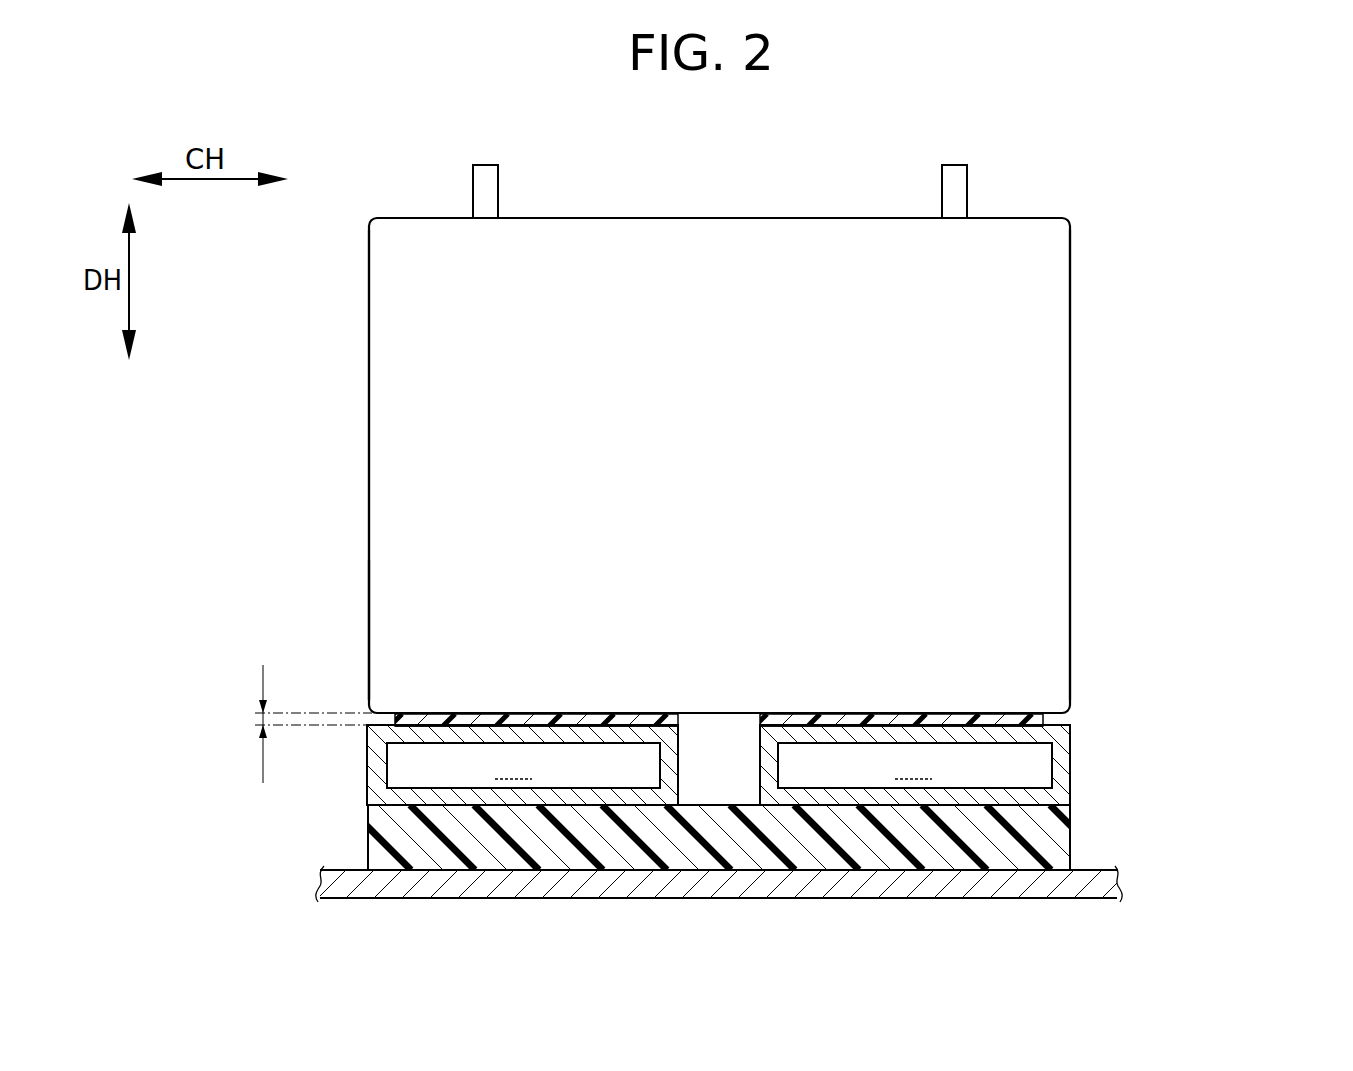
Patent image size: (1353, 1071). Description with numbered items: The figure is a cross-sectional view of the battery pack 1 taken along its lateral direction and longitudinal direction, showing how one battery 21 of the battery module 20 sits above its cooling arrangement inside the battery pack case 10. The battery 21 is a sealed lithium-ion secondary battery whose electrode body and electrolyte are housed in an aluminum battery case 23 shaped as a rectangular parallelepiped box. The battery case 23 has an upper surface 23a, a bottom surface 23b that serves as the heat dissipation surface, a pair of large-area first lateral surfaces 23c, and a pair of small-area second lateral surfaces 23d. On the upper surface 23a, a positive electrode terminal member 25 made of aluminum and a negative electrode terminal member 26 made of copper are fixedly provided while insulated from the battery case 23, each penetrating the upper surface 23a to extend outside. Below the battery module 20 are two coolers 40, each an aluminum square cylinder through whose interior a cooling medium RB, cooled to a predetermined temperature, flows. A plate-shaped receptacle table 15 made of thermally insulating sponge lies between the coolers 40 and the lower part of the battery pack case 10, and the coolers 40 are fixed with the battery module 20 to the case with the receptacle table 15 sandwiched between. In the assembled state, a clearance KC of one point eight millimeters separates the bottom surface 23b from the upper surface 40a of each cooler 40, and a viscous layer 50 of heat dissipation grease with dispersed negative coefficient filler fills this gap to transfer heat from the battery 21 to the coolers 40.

The battery pack 1 is at (1175, 210).
The battery pack case 10 is at (930, 890).
The receptacle table 15 is at (1037, 833).
The battery module 20 is at (723, 442).
The battery 21 is at (690, 242).
The battery case 23 is at (723, 442).
The upper surface 23a is at (570, 218).
The bottom surface 23b is at (990, 725).
The first lateral surface 23c is at (427, 448).
The second lateral surface 23d is at (367, 562).
The positive electrode terminal member 25 is at (477, 165).
The negative electrode terminal member 26 is at (950, 165).
The cooler 40 is at (717, 711).
The upper surface of cooler 40a is at (483, 712).
The viscous layer 50 is at (577, 712).
The cooling medium RB is at (713, 762).
The clearance KC is at (291, 724).